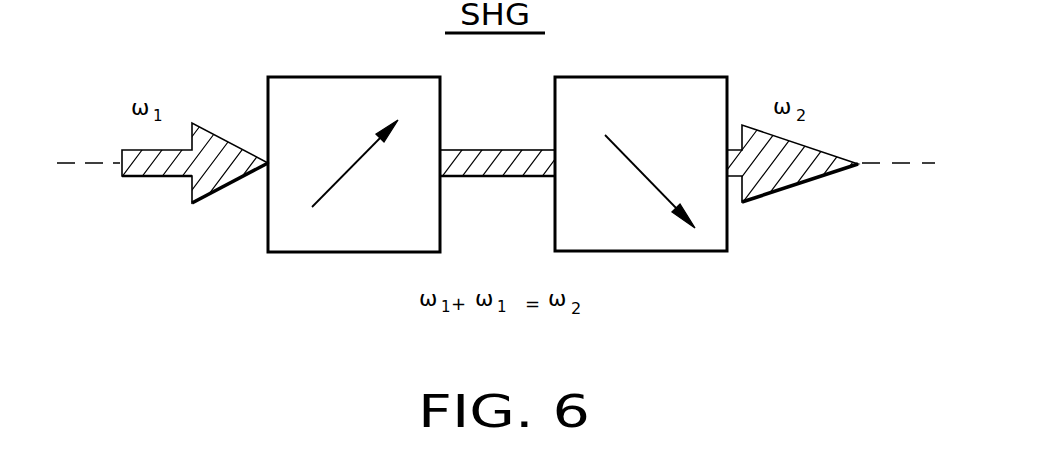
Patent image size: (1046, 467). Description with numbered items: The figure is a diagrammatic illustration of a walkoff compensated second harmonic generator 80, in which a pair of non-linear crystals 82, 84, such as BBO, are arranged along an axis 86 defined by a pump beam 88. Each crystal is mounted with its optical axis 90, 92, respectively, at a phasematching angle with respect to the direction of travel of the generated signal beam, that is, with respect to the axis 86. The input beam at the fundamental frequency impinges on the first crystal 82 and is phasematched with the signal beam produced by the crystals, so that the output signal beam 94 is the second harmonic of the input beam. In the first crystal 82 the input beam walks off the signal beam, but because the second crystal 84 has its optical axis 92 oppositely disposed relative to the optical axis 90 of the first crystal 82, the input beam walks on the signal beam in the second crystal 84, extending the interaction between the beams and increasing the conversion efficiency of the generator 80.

The walkoff compensated second harmonic generator 80 is at (700, 25).
The first non-linear crystal 82 is at (300, 235).
The second non-linear crystal 84 is at (667, 242).
The axis 86 is at (85, 163).
The pump beam 88 is at (233, 190).
The optical axis of first crystal 90 is at (353, 165).
The optical axis of second crystal 92 is at (652, 180).
The output signal beam 94 is at (807, 182).